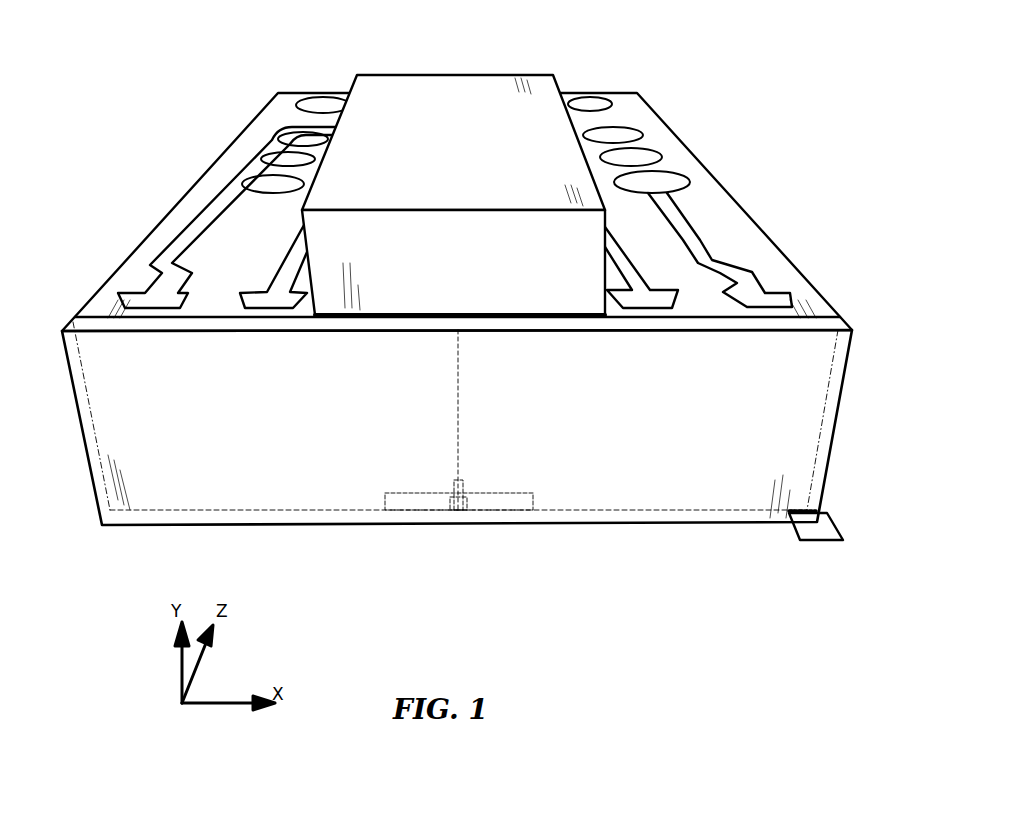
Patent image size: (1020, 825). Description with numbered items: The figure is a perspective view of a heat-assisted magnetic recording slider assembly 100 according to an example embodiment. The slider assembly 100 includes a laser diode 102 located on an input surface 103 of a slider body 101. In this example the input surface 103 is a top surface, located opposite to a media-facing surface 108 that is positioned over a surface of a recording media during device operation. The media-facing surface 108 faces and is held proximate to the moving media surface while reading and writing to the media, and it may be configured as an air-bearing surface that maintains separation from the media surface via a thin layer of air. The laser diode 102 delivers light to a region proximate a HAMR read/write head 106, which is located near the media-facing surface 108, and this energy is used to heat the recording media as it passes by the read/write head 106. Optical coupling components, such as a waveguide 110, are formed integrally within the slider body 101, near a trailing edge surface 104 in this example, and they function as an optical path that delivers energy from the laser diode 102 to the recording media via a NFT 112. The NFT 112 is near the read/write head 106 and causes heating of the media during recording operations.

The HAMR slider assembly 100 is at (650, 36).
The slider body 101 is at (252, 117).
The laser diode 102 is at (377, 73).
The input surface 103 is at (130, 272).
The trailing edge surface 104 is at (163, 498).
The HAMR read/write head 106 is at (463, 512).
The media-facing surface 108 is at (833, 541).
The waveguide 110 is at (458, 403).
The NFT 112 is at (457, 512).